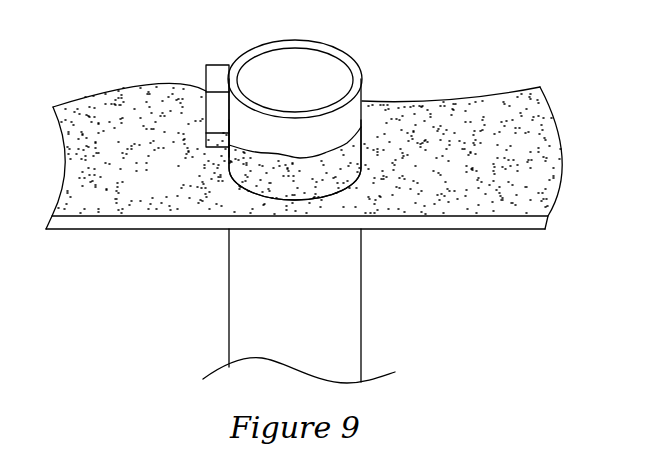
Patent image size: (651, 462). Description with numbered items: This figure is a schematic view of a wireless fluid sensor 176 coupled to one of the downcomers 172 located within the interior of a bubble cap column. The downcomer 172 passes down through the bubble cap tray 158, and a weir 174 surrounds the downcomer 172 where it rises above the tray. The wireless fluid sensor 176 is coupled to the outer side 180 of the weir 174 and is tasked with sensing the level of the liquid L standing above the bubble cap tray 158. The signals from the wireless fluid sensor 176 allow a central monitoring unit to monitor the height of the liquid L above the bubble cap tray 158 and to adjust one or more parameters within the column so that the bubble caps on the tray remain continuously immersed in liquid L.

The downcomer 172 is at (348, 307).
The weir 174 is at (333, 65).
The wireless fluid sensor 176 is at (215, 106).
The outer side 180 is at (352, 112).
The liquid L is at (497, 108).
The bubble cap tray 158 is at (520, 223).